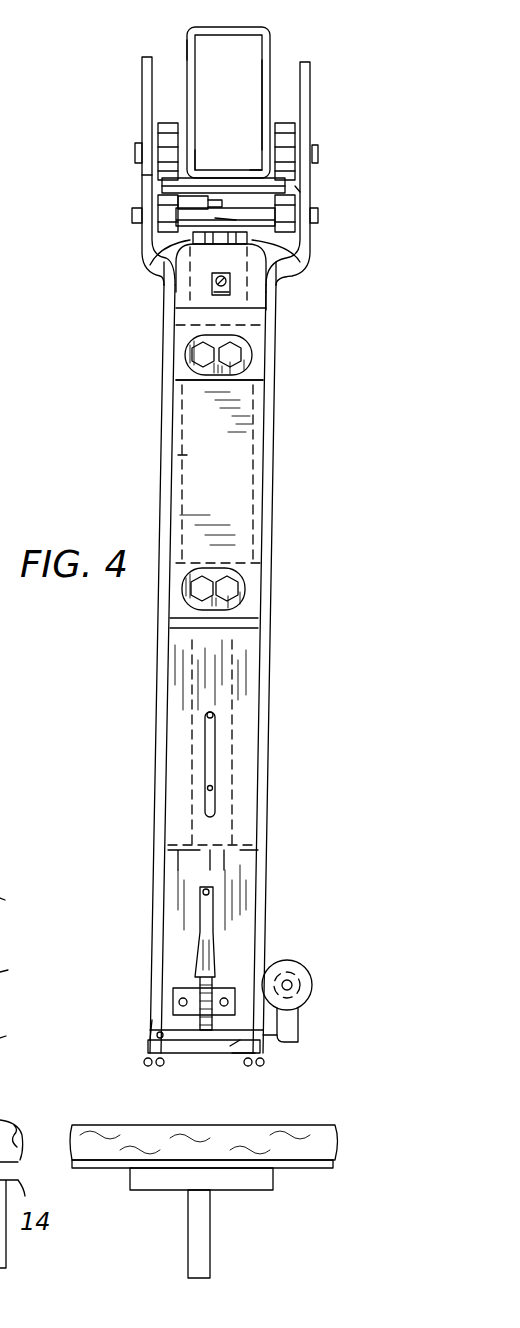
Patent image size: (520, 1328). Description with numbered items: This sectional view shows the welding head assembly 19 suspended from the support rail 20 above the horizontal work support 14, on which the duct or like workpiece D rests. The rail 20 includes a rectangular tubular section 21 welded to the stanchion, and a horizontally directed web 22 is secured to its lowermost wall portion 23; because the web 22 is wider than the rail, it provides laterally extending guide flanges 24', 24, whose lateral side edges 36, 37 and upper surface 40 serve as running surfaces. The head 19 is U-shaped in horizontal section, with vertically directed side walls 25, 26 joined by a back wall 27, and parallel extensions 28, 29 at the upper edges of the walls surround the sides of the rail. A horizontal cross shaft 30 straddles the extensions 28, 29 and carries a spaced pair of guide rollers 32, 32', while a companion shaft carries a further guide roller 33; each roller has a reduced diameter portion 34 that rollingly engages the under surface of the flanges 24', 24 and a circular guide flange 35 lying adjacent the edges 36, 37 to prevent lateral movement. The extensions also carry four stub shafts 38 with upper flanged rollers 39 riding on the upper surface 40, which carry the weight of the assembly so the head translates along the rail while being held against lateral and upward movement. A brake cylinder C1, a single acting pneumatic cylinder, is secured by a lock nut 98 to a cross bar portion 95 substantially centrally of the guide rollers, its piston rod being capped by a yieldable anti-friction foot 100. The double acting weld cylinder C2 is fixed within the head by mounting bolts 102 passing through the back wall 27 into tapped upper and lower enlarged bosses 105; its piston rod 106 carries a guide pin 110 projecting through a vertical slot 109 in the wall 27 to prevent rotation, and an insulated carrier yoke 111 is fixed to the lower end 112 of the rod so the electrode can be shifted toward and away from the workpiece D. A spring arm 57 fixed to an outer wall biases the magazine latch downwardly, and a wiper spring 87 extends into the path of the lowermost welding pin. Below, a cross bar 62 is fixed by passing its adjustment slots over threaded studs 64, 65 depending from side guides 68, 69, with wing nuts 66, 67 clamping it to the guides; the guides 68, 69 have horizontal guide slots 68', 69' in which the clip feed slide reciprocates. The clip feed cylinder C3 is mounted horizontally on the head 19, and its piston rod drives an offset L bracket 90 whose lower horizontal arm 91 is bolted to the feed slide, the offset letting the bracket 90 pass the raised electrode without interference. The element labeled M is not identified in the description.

The horizontal work support 14 is at (278, 1188).
The welding head assembly 19 is at (310, 440).
The support rail 20 is at (188, 25).
The rectangular tubular section 21 is at (187, 42).
The horizontally directed web 22 is at (226, 167).
The lowermost wall portion 23 is at (211, 170).
The upper surface 40 is at (265, 168).
The guide flange 24 is at (275, 214).
The guide flange 24' is at (112, 163).
The side wall 25 is at (265, 405).
The side wall 26 is at (163, 405).
The back wall 27 is at (225, 468).
The extension 28 is at (141, 252).
The extension 29 is at (304, 193).
The horizontal cross shaft 30 is at (132, 218).
The guide roller 32 is at (142, 287).
The guide roller 32' is at (331, 271).
The guide roller 33 is at (225, 219).
The reduced diameter portion 34 is at (318, 290).
The circular guide flange 35 is at (148, 265).
The lateral side edge 36 is at (165, 192).
The lateral side edge 37 is at (290, 185).
The stub shaft 38 is at (135, 150).
The upper flanged roller 39 is at (174, 128).
The spring arm 57 is at (222, 295).
The cross bar 62 is at (216, 1056).
The threaded stud 64 is at (160, 1066).
The threaded stud 65 is at (258, 1068).
The wing nut 66 is at (144, 1062).
The wing nut 67 is at (264, 1062).
The side guide 68 is at (121, 1040).
The guide slot 68' is at (123, 1008).
The side guide 69 is at (320, 1040).
The guide slot 69' is at (243, 1070).
The wiper spring 87 is at (210, 905).
The L bracket 90 is at (300, 1036).
The lower horizontal arm 91 is at (184, 1054).
The cross bar portion 95 is at (241, 288).
The lock nut 98 is at (268, 288).
The anti-friction foot 100 is at (200, 203).
The mounting bolt 102 is at (200, 352).
The enlarged boss 105 is at (256, 353).
The piston rod 106 is at (230, 770).
The vertical slot 109 is at (207, 788).
The guide pin 110 is at (207, 714).
The insulated carrier yoke 111 is at (185, 845).
The lower end 112 is at (240, 845).
The brake cylinder C1 is at (190, 305).
The weld cylinder C2 is at (170, 455).
The clip feed cylinder C3 is at (292, 962).
The mat M is at (120, 1130).
The workpiece D is at (108, 1166).